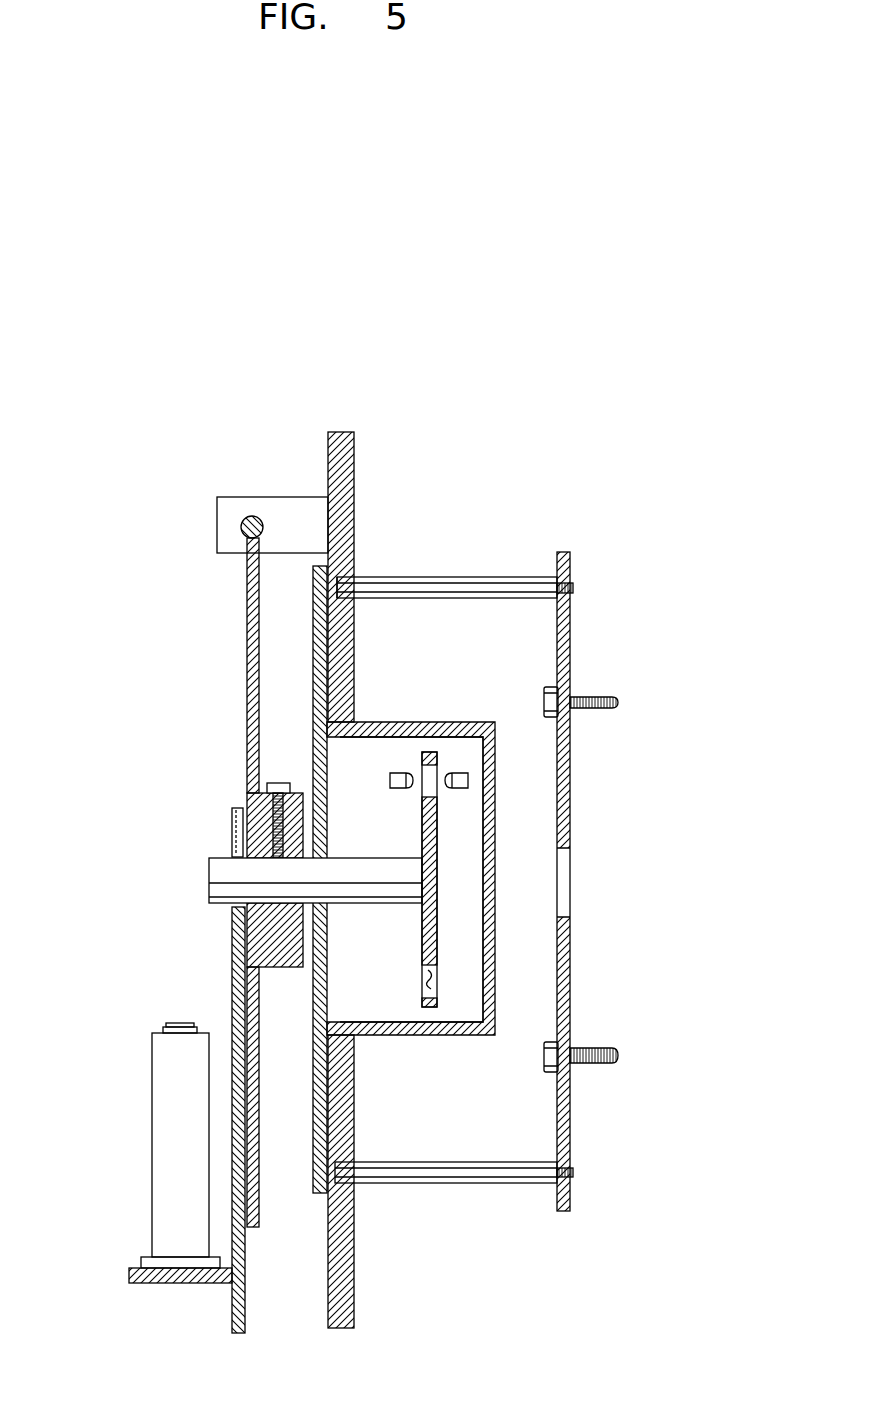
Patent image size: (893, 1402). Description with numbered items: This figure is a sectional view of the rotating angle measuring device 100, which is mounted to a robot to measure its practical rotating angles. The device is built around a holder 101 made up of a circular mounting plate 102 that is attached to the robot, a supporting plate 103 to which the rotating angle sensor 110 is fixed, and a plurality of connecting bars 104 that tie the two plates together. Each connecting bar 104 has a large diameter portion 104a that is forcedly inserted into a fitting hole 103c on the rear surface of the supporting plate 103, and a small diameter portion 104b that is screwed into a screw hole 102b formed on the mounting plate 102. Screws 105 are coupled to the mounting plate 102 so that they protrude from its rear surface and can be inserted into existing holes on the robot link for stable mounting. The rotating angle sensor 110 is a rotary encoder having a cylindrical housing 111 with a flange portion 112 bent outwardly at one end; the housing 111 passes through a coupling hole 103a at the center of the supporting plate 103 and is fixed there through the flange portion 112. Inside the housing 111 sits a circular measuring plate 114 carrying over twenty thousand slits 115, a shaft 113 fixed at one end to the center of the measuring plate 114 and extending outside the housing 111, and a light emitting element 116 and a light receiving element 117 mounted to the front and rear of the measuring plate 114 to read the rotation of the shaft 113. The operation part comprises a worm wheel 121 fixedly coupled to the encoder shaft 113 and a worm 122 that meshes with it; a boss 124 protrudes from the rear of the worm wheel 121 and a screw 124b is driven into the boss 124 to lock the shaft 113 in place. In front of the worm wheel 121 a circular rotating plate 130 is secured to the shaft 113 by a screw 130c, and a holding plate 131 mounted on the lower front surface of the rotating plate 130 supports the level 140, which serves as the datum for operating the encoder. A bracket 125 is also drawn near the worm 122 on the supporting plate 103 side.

The rotating angle measuring device 100 is at (66, 322).
The holder 101 is at (617, 447).
The mounting plate 102 is at (572, 553).
The screw hole 102b is at (573, 590).
The supporting plate 103 is at (354, 467).
The coupling hole 103a is at (357, 1040).
The fitting hole 103c is at (359, 577).
The connecting bar 104 is at (515, 571).
The large diameter portion 104a is at (525, 1183).
The small diameter portion 104b is at (574, 1172).
The screw 105 is at (593, 712).
The rotating angle sensor 110 is at (502, 879).
The housing 111 is at (465, 722).
The flange portion 112 is at (317, 643).
The shaft 113 is at (209, 880).
The measuring plate 114 is at (437, 920).
The slit 115 is at (432, 977).
The light emitting element 116 is at (397, 772).
The light receiving element 117 is at (468, 777).
The worm wheel 121 is at (250, 577).
The worm 122 is at (240, 530).
The boss 124 is at (262, 973).
The screw 124b is at (280, 790).
The bracket 125 is at (287, 512).
The rotating plate 130 is at (232, 930).
The screw 130c is at (228, 805).
The holding plate 131 is at (129, 1276).
The level 140 is at (163, 1143).